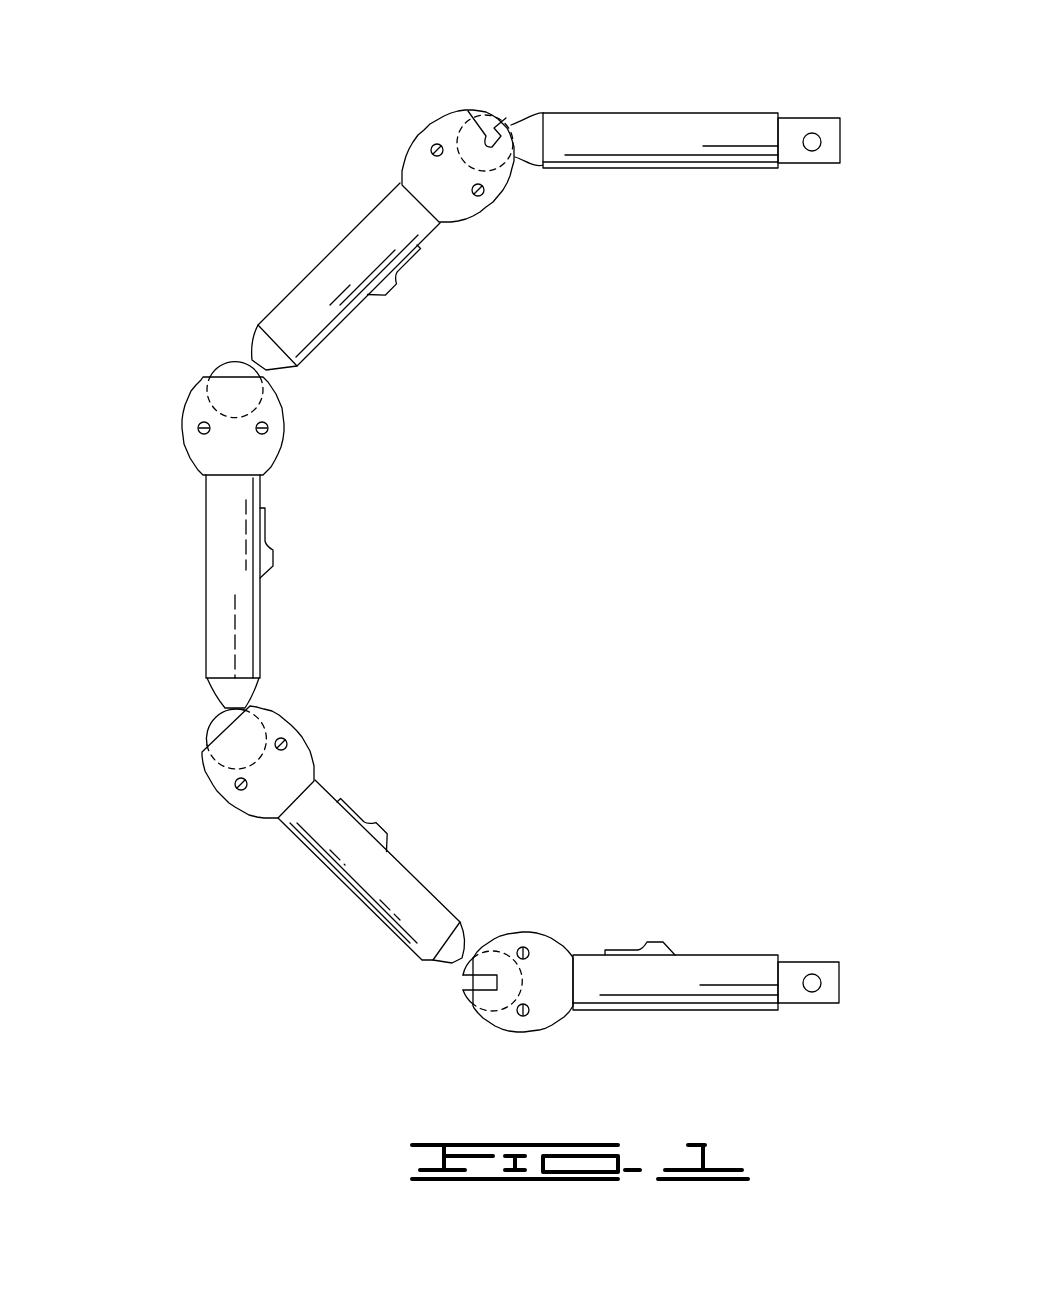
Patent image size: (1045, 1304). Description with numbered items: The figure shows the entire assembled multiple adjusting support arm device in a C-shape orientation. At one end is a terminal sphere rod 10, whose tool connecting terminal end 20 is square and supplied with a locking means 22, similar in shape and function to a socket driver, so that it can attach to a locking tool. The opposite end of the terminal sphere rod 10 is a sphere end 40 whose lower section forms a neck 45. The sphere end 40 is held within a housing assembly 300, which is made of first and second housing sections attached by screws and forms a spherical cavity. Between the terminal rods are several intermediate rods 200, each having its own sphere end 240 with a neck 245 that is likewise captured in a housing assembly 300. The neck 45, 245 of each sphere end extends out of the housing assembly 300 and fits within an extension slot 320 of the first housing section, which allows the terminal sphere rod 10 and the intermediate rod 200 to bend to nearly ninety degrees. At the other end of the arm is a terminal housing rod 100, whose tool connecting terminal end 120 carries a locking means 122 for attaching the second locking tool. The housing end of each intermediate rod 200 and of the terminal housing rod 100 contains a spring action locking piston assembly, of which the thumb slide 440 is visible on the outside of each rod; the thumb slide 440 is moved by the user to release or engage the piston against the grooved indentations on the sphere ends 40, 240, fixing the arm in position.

The terminal sphere rod 10 is at (680, 106).
The tool connecting terminal end 20 is at (838, 148).
The locking means 22 is at (812, 133).
The sphere end 40 is at (505, 118).
The neck 45 is at (527, 160).
The terminal housing rod 100 is at (668, 1012).
The tool connecting terminal end 120 is at (840, 985).
The locking means 122 is at (812, 973).
The intermediate rod 200 is at (322, 258).
The sphere end 240 is at (228, 365).
The neck 245 is at (285, 365).
The housing assembly 300 is at (405, 145).
The extension slot 320 is at (480, 130).
The thumb slide 440 is at (395, 280).